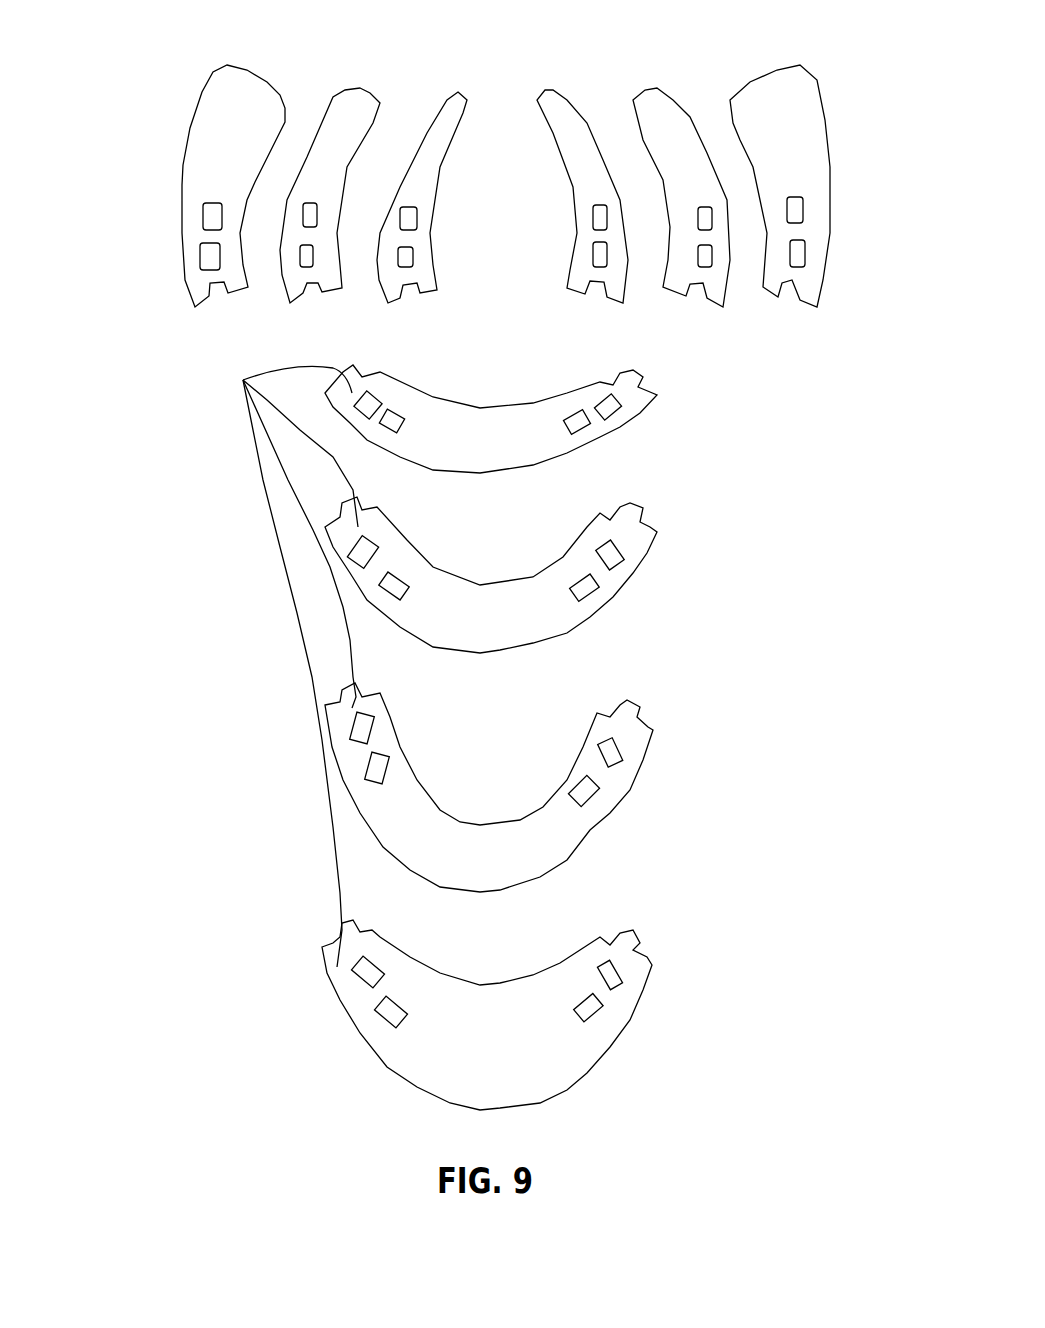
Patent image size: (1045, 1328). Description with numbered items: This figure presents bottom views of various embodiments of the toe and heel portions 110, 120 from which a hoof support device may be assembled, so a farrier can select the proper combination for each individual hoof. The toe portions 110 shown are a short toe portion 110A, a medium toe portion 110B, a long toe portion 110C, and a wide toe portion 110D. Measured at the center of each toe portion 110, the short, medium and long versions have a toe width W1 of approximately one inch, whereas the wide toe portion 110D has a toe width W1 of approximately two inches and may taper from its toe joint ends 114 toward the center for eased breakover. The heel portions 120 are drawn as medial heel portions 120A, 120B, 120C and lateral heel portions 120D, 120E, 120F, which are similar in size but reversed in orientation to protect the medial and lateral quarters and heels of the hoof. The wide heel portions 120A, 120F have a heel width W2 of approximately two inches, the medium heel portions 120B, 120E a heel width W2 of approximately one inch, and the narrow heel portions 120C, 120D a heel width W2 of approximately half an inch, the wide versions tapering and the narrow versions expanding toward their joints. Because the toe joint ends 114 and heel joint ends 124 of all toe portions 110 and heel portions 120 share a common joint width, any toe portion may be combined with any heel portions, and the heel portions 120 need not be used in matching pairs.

The heel portion 120 is at (128, 179).
The wide heel portion 120A is at (256, 100).
The medium heel portion 120B is at (360, 100).
The narrow heel portion 120C is at (460, 107).
The narrow heel portion 120D is at (555, 110).
The medium heel portion 120E is at (660, 107).
The wide heel portion 120F is at (763, 122).
The heel joint end 124 is at (215, 273).
The toe portion 110 is at (133, 660).
The short toe portion 110A is at (500, 442).
The medium toe portion 110B is at (503, 618).
The long toe portion 110C is at (505, 832).
The wide toe portion 110D is at (500, 1070).
The toe joint end 114 is at (281, 660).
The toe width W1 is at (480, 406).
The heel width W2 is at (201, 93).